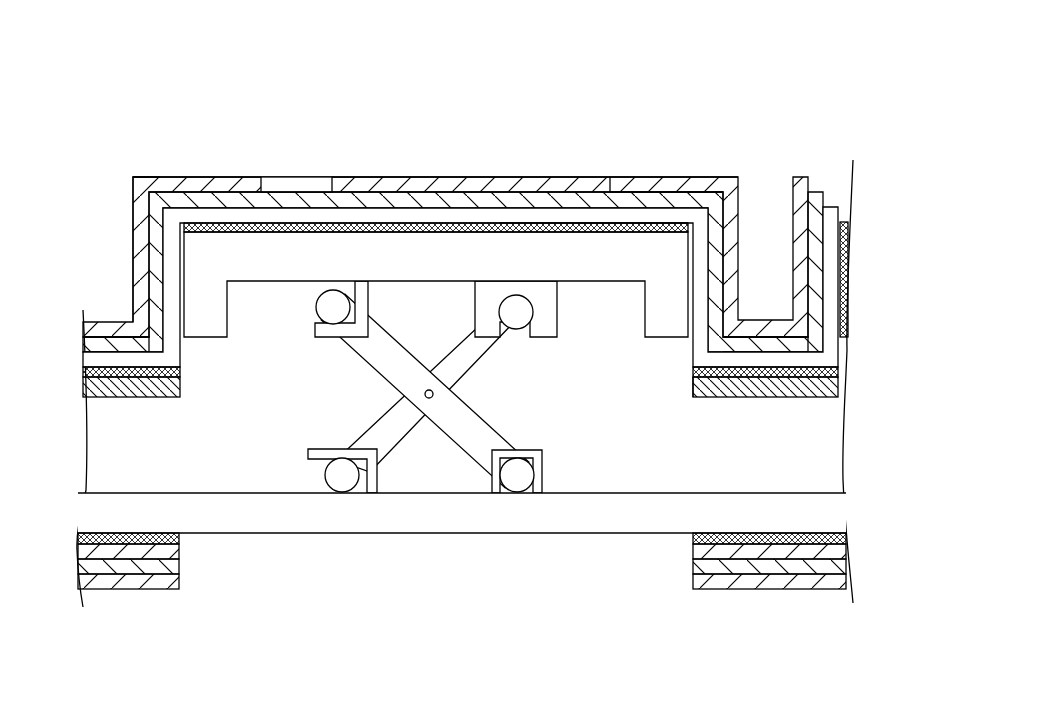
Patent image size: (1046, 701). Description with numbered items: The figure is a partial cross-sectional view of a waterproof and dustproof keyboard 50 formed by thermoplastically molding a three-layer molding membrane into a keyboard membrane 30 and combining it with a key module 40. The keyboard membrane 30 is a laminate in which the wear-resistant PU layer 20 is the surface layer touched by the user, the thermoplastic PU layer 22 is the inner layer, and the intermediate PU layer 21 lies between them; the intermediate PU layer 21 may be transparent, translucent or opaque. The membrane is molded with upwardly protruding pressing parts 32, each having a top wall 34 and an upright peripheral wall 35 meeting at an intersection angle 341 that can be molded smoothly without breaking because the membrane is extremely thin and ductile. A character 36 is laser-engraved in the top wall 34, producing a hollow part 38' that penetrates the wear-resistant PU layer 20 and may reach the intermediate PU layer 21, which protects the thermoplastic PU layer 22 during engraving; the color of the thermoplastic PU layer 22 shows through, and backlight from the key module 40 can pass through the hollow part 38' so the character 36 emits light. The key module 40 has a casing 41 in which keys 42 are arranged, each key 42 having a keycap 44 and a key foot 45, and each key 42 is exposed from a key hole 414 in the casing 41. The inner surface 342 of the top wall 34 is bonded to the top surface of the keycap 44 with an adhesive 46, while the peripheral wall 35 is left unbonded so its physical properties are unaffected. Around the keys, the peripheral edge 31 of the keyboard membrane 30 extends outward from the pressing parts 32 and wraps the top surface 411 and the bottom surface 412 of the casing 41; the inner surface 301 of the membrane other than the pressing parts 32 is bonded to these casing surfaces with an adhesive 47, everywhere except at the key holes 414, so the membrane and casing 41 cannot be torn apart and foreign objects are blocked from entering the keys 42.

The waterproof and dustproof keyboard 50 is at (767, 109).
The keyboard membrane 30 is at (655, 166).
The wear-resistant PU layer 20 is at (380, 186).
The intermediate PU layer 21 is at (410, 196).
The thermoplastic PU layer 22 is at (445, 214).
The peripheral edge 31 is at (772, 588).
The pressing part 32 is at (160, 176).
The top wall 34 is at (204, 178).
The intersection angle 341 is at (132, 176).
The inner surface of the top wall 342 is at (565, 216).
The peripheral wall 35 is at (133, 257).
The character 36 is at (627, 83).
The hollow part 38' is at (499, 142).
The inner surface of the keyboard membrane 301 is at (113, 348).
The key module 40 is at (252, 546).
The casing 41 is at (308, 520).
The top surface 411 is at (156, 397).
The bottom surface 412 is at (517, 533).
The key hole 414 is at (693, 388).
The key 42 is at (490, 397).
The keycap 44 is at (267, 263).
The key foot 45 is at (400, 428).
The adhesive 46 is at (505, 228).
The adhesive 47 is at (80, 374).